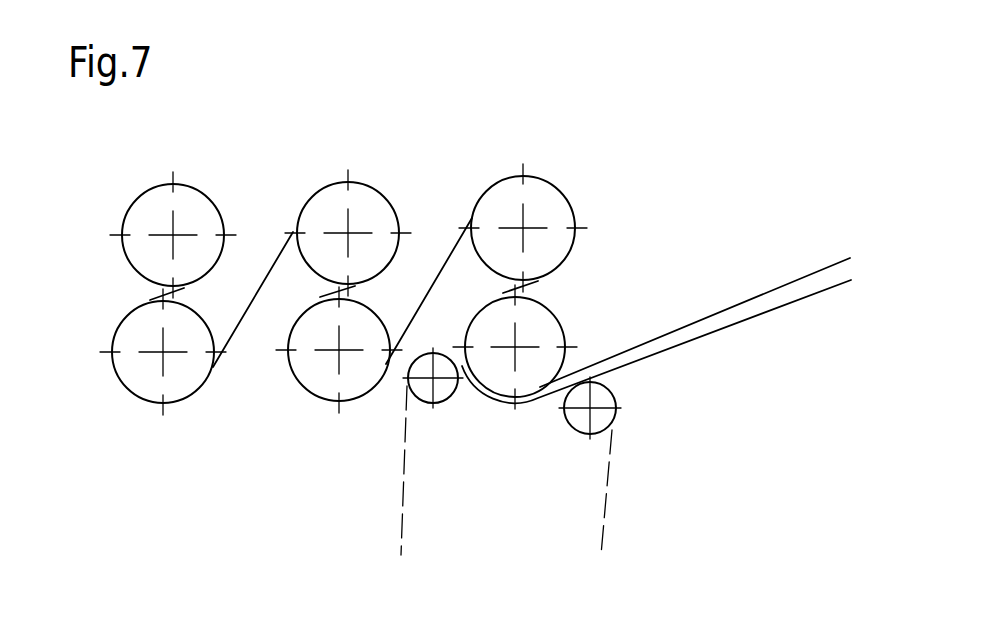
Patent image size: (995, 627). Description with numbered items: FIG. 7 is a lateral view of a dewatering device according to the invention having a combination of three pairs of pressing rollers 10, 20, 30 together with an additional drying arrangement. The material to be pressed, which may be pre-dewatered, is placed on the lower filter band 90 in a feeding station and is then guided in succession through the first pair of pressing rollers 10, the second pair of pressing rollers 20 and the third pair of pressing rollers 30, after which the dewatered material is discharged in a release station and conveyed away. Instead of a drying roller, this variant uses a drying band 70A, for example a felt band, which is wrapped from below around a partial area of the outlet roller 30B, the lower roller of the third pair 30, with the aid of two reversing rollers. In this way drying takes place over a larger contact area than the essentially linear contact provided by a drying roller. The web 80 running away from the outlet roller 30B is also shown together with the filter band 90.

The pair of pressing rollers 10 is at (178, 198).
The pair of pressing rollers 20 is at (357, 195).
The pair of pressing rollers 30 is at (557, 256).
The outlet roller 30B is at (550, 365).
The drying band 70A is at (607, 507).
The first web 80 is at (810, 272).
The lower filter band 90 is at (813, 296).